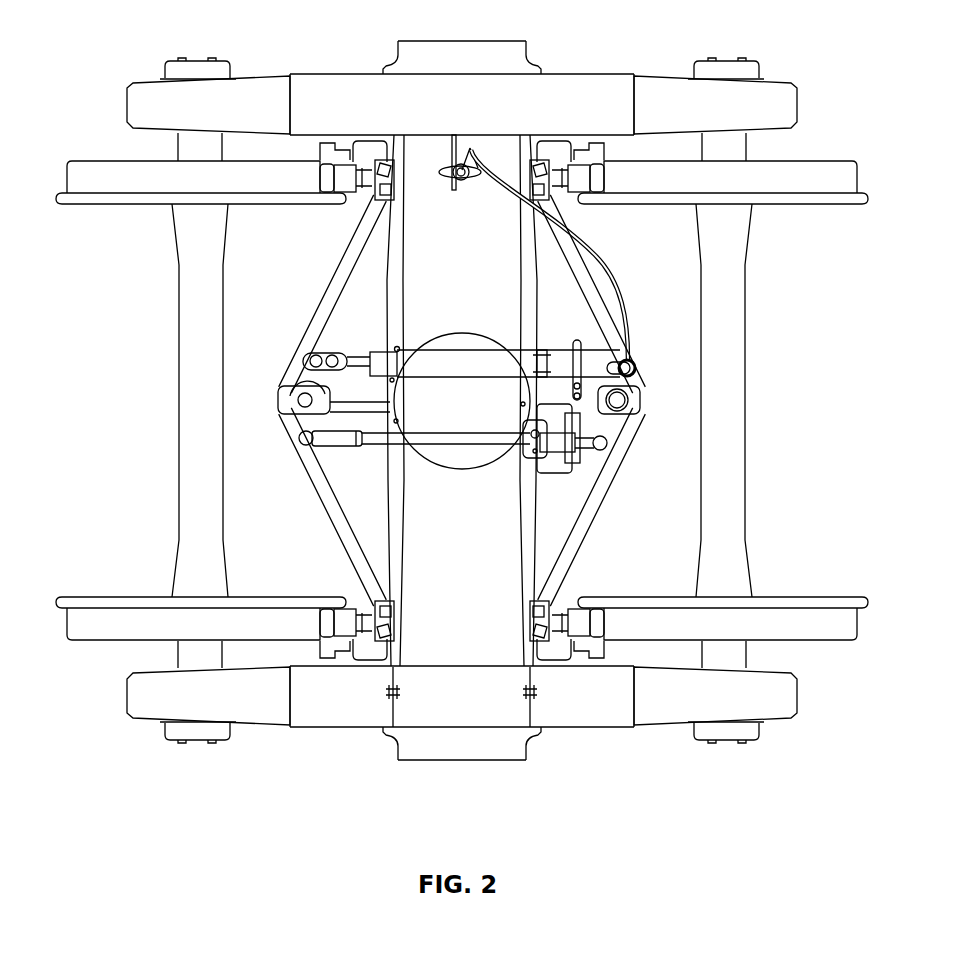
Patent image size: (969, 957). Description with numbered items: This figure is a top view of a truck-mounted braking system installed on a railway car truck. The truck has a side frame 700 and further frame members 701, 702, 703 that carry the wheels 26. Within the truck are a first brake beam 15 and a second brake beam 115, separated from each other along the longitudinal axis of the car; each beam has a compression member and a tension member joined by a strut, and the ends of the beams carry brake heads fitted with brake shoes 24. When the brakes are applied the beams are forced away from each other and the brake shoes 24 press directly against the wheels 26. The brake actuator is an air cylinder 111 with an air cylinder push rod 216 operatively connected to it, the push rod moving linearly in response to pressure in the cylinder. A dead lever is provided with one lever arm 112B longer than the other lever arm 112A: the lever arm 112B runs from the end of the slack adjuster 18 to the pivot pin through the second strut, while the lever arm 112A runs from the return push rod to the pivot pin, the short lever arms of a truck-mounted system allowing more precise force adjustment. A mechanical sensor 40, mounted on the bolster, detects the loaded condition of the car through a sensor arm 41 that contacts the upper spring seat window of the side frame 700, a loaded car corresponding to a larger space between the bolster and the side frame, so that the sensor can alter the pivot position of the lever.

The side frame 700 is at (593, 92).
The lower frame member 701 is at (637, 703).
The right frame column 702 is at (735, 390).
The left frame column 703 is at (188, 385).
The wheels 26 is at (243, 178).
The brake shoes 24 is at (347, 177).
The mechanical sensor 40 is at (453, 223).
The sensor arm 41 is at (446, 150).
The slack adjuster 18 is at (473, 363).
The second brake beam 115 is at (313, 511).
The first brake beam 15 is at (628, 501).
The lever arm 112A is at (277, 373).
The lever arm 112B is at (270, 423).
The air cylinder push rod 216 is at (598, 497).
The air cylinder 111 is at (548, 478).